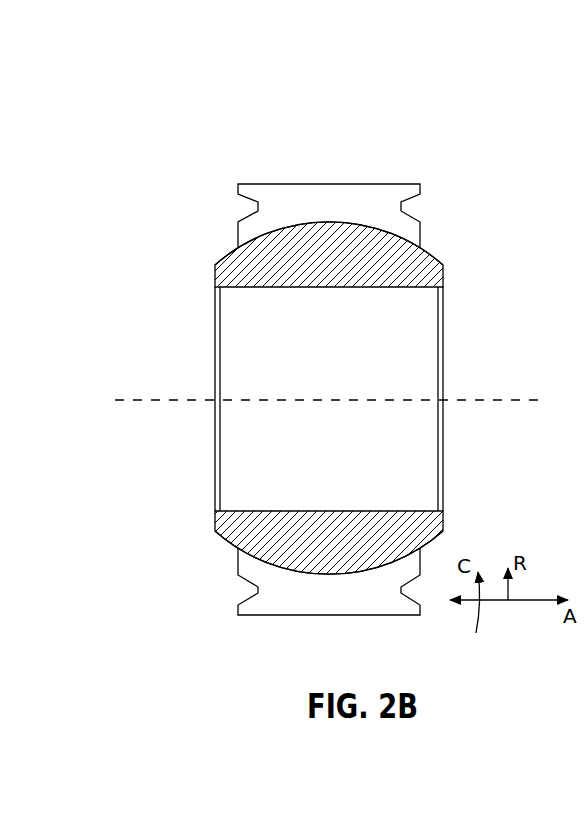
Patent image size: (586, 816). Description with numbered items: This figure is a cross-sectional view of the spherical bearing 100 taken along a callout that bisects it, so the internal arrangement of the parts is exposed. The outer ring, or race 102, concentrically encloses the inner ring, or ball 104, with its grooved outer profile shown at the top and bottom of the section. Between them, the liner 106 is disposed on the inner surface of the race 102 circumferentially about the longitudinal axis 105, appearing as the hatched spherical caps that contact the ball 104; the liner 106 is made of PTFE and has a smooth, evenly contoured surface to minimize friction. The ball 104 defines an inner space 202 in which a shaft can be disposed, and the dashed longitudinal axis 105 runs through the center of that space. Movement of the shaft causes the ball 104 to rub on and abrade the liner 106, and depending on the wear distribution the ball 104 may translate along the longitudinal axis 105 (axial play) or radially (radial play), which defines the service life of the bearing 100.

The spherical bearing 100 is at (432, 85).
The outer ring 102 is at (417, 215).
The inner ring 104 is at (243, 287).
The longitudinal axis 105 is at (138, 400).
The liner 106 is at (240, 237).
The inner space 202 is at (370, 352).